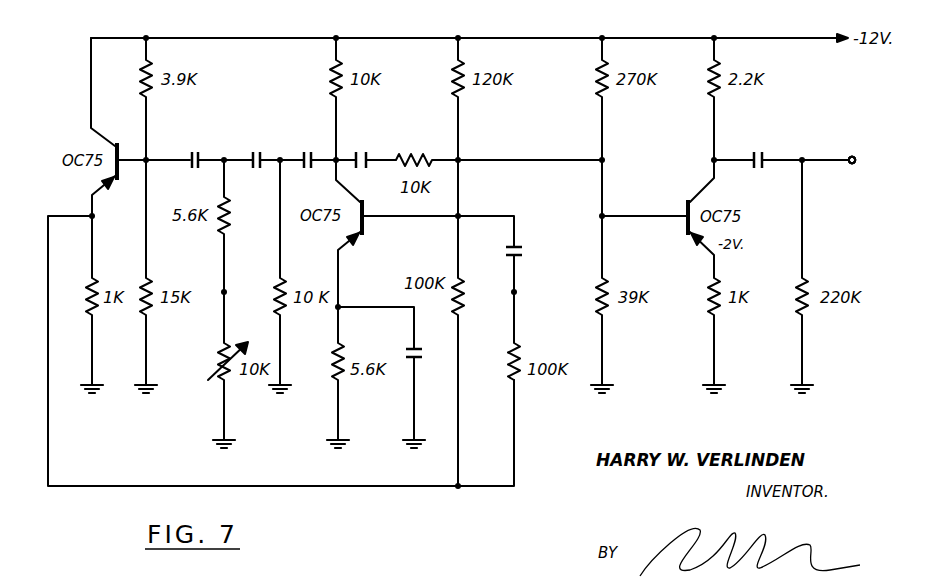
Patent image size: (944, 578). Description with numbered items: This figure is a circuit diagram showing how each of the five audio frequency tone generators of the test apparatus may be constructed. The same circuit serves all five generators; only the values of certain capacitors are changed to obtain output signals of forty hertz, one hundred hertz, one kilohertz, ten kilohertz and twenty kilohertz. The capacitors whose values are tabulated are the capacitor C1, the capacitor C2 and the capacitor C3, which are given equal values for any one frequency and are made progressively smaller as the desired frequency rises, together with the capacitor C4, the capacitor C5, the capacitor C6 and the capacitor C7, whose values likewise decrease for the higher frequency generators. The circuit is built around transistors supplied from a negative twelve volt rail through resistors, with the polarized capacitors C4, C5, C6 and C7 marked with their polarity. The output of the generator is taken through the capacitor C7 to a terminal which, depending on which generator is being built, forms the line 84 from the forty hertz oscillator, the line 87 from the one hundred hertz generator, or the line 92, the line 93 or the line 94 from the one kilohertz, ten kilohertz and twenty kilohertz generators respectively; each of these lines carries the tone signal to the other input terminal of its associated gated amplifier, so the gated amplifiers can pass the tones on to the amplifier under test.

The line 84 is at (878, 117).
The line 87 is at (812, 129).
The line 92 is at (826, 129).
The line 93 is at (840, 129).
The line 94 is at (867, 129).
The capacitor C1 is at (196, 148).
The capacitor C2 is at (255, 148).
The capacitor C3 is at (306, 148).
The capacitor C4 is at (422, 359).
The capacitor C5 is at (523, 255).
The capacitor C6 is at (362, 154).
The capacitor C7 is at (759, 154).